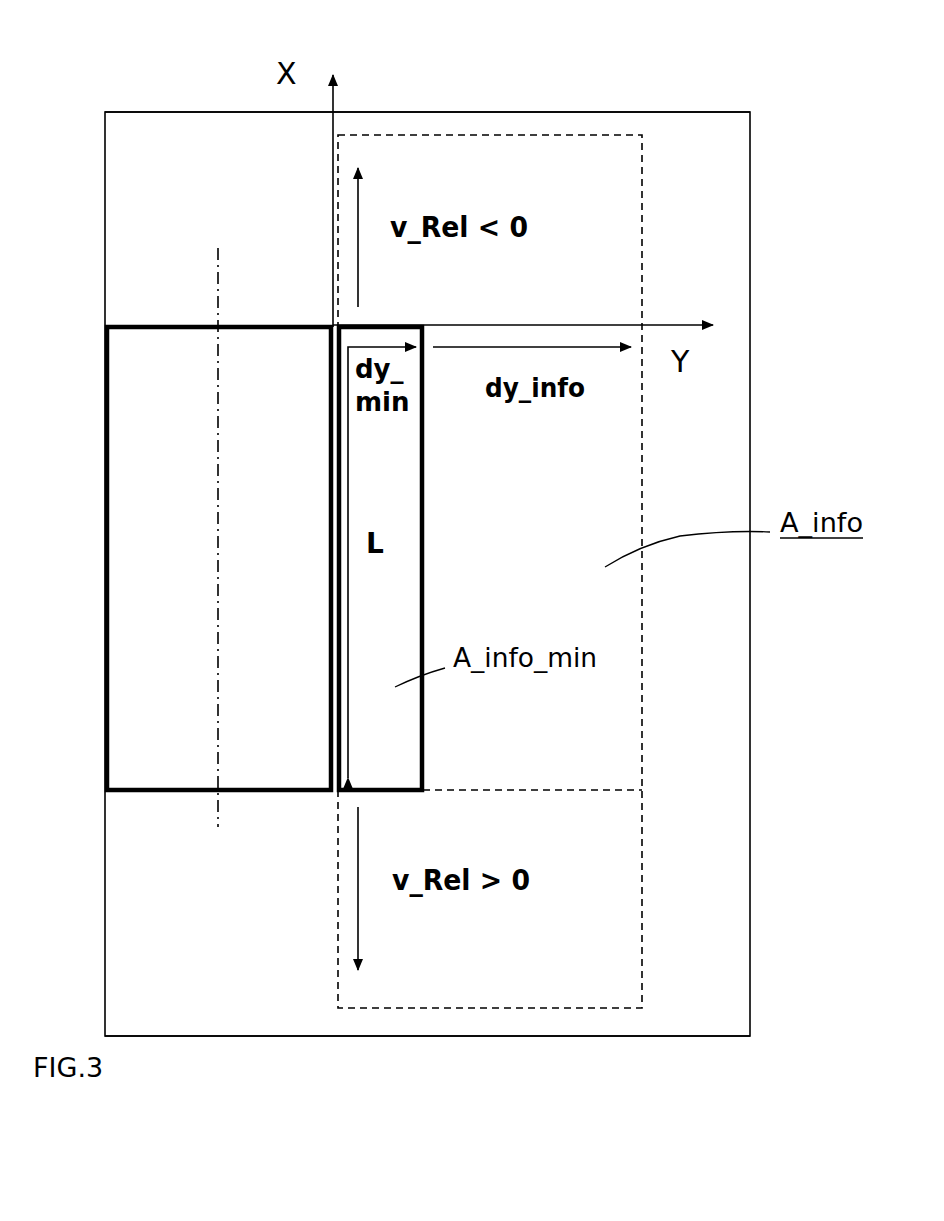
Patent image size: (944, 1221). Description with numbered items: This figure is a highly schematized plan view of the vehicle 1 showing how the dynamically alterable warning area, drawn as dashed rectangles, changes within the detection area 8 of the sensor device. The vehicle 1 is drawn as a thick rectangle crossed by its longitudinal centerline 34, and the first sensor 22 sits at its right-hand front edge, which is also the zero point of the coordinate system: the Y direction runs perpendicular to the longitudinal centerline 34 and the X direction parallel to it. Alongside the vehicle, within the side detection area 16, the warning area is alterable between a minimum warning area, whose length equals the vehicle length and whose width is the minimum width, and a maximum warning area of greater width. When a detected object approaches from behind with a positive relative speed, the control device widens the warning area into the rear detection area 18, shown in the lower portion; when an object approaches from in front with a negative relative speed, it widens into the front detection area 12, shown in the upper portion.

The vehicle 1 is at (171, 546).
The detection area 8 is at (706, 655).
The front detection area 12 is at (435, 122).
The side detection area 16 is at (727, 463).
The rear detection area 18 is at (452, 1022).
The first sensor 22 is at (333, 327).
The longitudinal centerline 34 is at (217, 401).